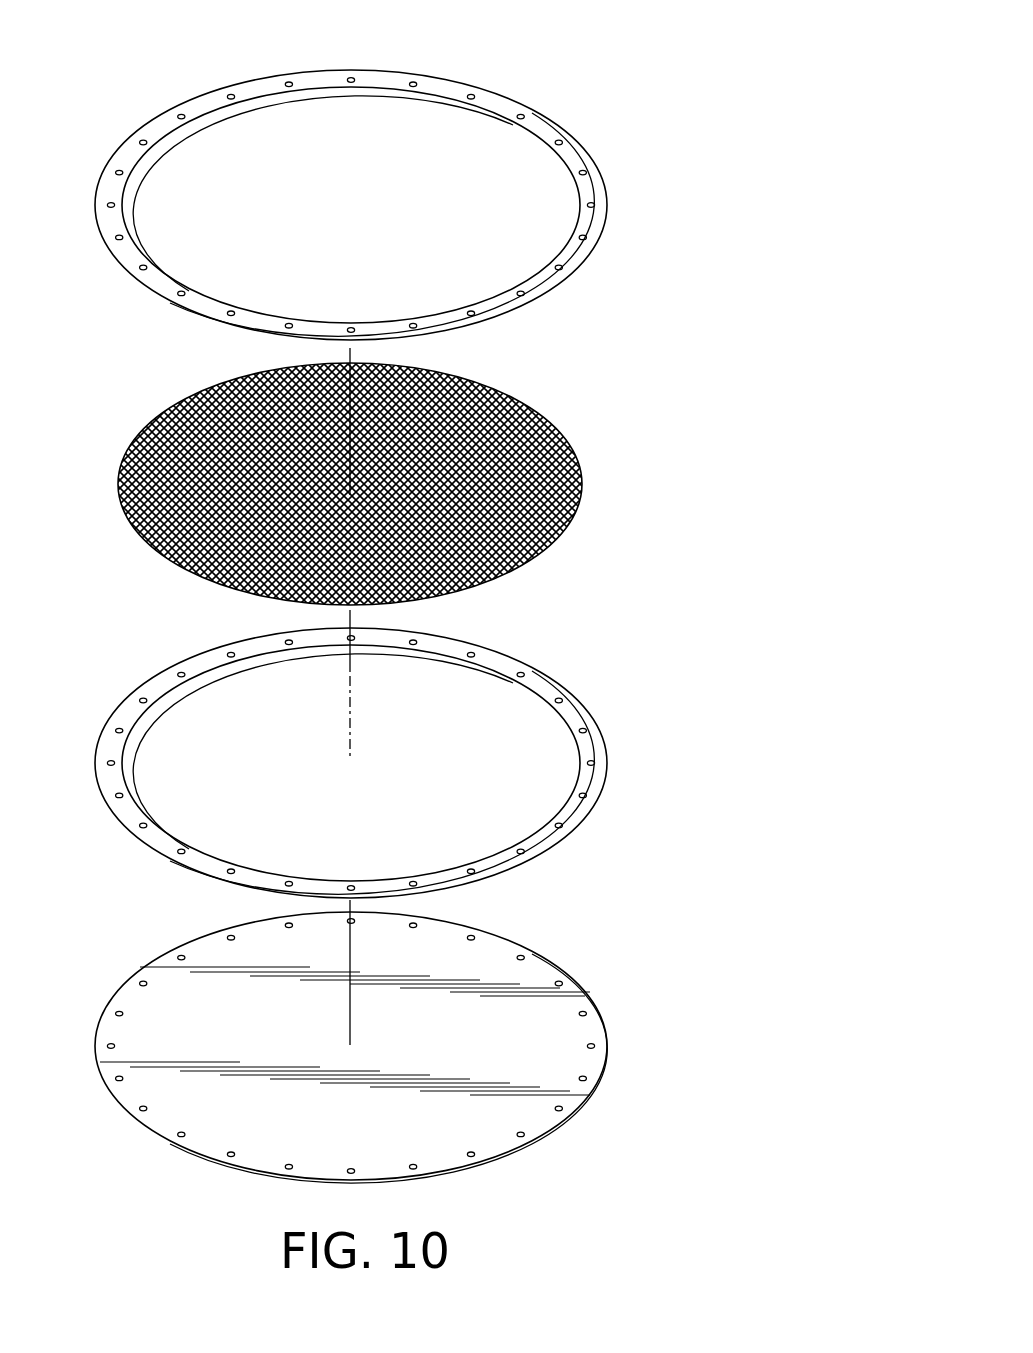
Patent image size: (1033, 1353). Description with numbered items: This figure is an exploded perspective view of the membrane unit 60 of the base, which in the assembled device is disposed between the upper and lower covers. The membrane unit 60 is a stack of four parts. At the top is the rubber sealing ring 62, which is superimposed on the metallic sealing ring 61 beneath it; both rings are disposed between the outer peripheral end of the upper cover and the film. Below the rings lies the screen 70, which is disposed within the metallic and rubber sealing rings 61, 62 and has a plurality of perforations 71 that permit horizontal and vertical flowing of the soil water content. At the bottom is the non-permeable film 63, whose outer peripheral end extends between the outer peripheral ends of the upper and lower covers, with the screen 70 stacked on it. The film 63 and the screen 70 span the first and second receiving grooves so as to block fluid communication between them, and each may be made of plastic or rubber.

The membrane unit 60 is at (582, 112).
The rubber sealing ring 62 is at (603, 176).
The screen 70 is at (592, 418).
The perforations 71 is at (580, 468).
The metallic sealing ring 61 is at (553, 680).
The non-permeable film 63 is at (555, 966).